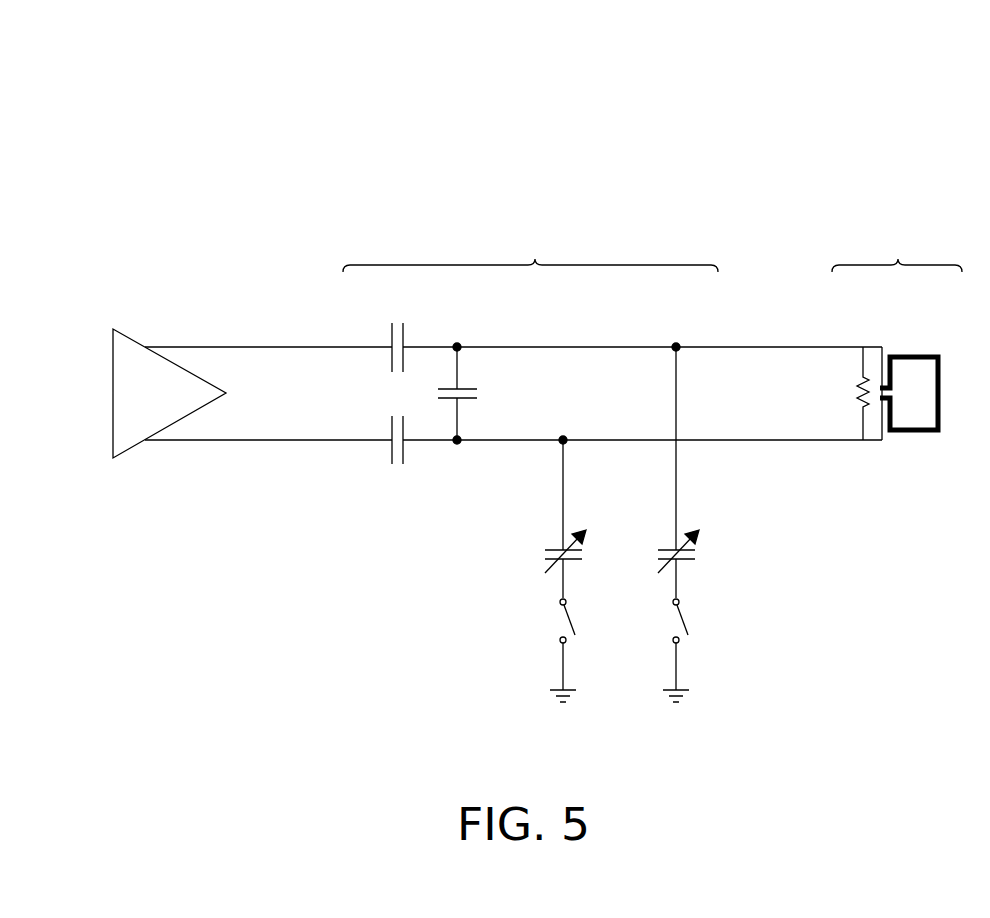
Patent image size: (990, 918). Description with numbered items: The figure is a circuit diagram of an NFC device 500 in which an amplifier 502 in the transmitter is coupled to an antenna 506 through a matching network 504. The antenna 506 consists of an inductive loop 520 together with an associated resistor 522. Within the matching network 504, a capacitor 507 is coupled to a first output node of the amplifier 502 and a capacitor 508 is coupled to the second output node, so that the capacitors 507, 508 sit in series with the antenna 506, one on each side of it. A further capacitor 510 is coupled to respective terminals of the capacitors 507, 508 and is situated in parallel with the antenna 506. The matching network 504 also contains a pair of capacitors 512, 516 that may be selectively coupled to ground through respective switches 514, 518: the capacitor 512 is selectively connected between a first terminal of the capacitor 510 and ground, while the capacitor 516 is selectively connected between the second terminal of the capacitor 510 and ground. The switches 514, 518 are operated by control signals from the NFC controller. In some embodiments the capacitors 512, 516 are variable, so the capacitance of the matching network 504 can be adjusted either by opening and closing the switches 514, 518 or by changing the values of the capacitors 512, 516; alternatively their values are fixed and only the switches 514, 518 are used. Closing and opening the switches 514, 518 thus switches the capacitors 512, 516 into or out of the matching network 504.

The NFC device 500 is at (489, 86).
The amplifier 502 is at (173, 402).
The matching network 504 is at (530, 241).
The antenna 506 is at (897, 240).
The capacitor 507 is at (390, 341).
The capacitor 508 is at (390, 455).
The capacitor 510 is at (470, 388).
The capacitor 512 is at (552, 548).
The switch 514 is at (568, 612).
The capacitor 516 is at (672, 548).
The switch 518 is at (682, 612).
The inductive loop 520 is at (925, 355).
The resistor 522 is at (860, 405).